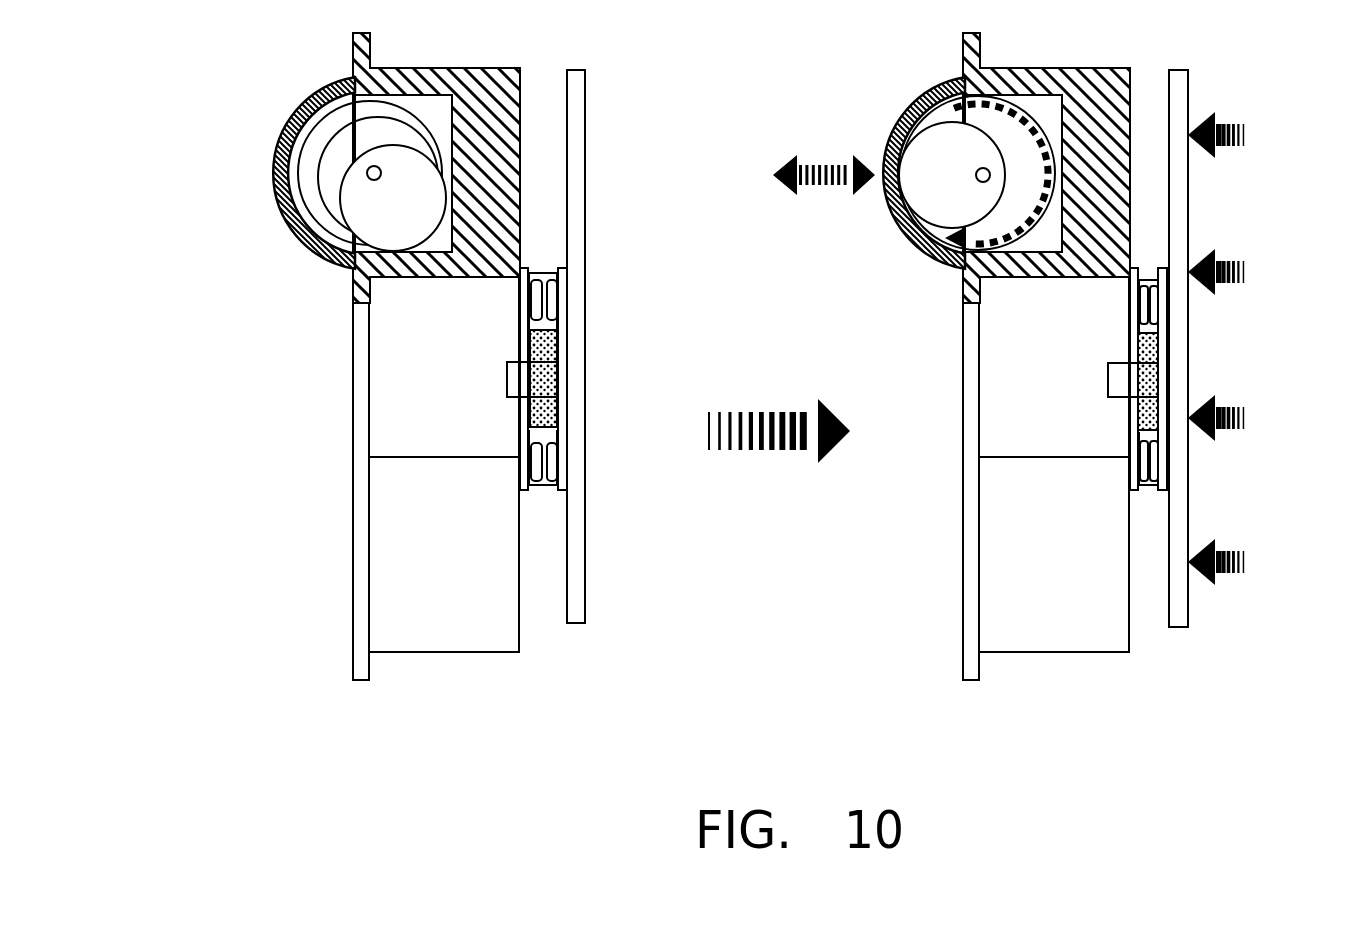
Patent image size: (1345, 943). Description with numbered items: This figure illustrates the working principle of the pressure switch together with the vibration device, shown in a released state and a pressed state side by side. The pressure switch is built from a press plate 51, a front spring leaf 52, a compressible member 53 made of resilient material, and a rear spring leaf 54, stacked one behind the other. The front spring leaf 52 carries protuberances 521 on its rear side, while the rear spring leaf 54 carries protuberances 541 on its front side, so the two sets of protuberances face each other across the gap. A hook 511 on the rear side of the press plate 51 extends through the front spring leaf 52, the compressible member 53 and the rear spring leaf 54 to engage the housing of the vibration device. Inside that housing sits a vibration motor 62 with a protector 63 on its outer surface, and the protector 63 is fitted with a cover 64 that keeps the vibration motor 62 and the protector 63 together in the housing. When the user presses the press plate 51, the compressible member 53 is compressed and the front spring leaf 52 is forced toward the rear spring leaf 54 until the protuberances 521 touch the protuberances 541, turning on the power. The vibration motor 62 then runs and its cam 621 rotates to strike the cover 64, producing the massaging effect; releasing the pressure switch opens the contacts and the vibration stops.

The press plate 51 is at (582, 585).
The hook 511 is at (507, 382).
The front spring leaf 52 is at (562, 298).
The protuberances 521 is at (551, 276).
The compressible member 53 is at (560, 345).
The rear spring leaf 54 is at (523, 493).
The protuberances 541 is at (533, 276).
The vibration motor 62 is at (330, 120).
The cam 621 is at (357, 220).
The protector 63 is at (298, 212).
The cover 64 is at (277, 192).